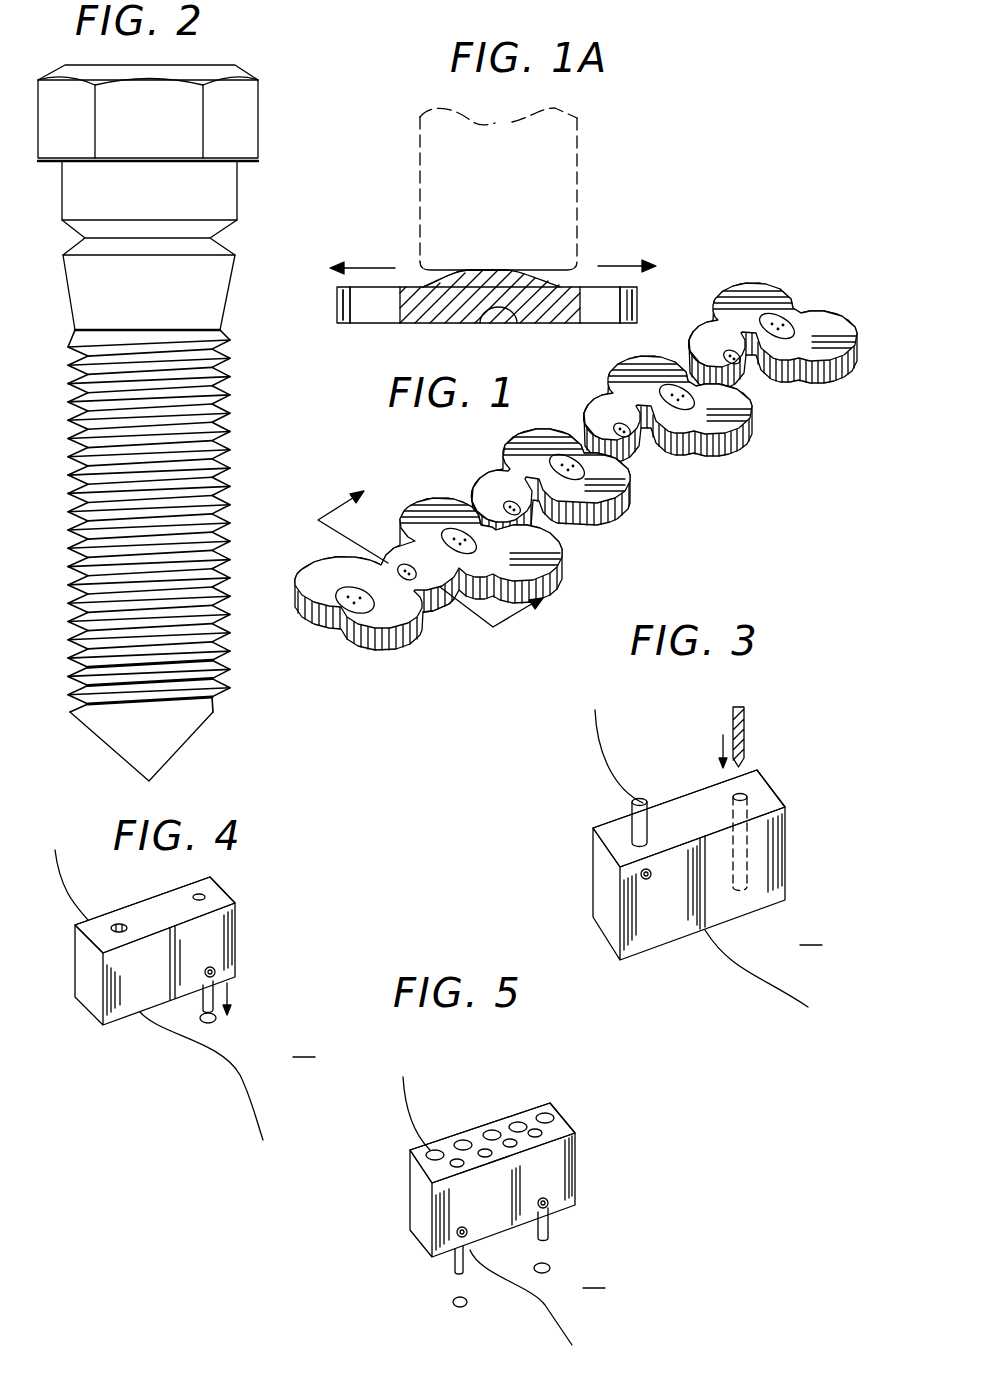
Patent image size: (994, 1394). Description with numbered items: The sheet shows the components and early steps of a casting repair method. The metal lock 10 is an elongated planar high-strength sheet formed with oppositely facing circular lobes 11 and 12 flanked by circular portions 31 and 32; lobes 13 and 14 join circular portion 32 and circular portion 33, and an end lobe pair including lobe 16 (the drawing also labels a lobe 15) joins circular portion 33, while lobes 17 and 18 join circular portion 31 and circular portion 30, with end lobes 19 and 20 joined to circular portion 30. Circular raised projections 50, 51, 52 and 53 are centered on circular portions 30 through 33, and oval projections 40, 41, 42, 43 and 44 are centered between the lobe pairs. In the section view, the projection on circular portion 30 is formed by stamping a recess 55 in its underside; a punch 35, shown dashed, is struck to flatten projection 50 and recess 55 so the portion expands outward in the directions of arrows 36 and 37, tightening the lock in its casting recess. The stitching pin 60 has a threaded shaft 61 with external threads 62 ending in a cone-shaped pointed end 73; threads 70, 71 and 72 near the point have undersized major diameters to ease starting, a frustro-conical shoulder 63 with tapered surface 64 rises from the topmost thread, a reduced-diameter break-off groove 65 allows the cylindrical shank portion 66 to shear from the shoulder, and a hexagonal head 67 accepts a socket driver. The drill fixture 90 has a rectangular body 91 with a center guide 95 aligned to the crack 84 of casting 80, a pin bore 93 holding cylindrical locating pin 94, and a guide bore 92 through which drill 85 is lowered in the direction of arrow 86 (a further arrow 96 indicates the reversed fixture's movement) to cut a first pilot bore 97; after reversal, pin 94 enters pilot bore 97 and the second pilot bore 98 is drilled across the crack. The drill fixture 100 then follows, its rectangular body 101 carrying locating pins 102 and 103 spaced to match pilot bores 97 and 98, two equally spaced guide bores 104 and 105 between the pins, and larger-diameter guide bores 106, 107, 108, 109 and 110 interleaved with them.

In FIG. 1A, the metal lock 10 is at (600, 256).
In FIG. 1, the metal lock 10 is at (645, 497).
In FIG. 1, the circular lobe 11 is at (617, 507).
In FIG. 1, the circular lobe 12 is at (561, 483).
In FIG. 1, the circular lobe 13 is at (710, 452).
In FIG. 1, the circular lobe 14 is at (668, 414).
In FIG. 1, the link lobe 15 is at (826, 388).
In FIG. 1, the circular lobe 16 is at (775, 343).
In FIG. 1A, the circular lobe 17 is at (623, 303).
In FIG. 1, the circular lobe 17 is at (530, 582).
In FIG. 1A, the circular lobe 18 is at (337, 305).
In FIG. 1, the circular lobe 18 is at (424, 595).
In FIG. 1, the circular lobe 19 is at (412, 642).
In FIG. 1, the circular lobe 20 is at (317, 580).
In FIG. 1A, the circular portion 30 is at (425, 300).
In FIG. 1, the circular portion 30 is at (433, 602).
In FIG. 1, the circular portion 31 is at (490, 485).
In FIG. 1, the circular portion 32 is at (598, 412).
In FIG. 1, the circular portion 33 is at (700, 345).
In FIG. 1A, the punch 35 is at (420, 172).
In FIG. 1A, the arrow 36 is at (376, 268).
In FIG. 1A, the arrow 37 is at (625, 262).
In FIG. 1, the raised projection 40 is at (565, 457).
In FIG. 1, the raised projection 41 is at (673, 390).
In FIG. 1, the raised projection 42 is at (776, 318).
In FIG. 1A, the raised projection 43 is at (470, 272).
In FIG. 1, the raised projection 43 is at (457, 532).
In FIG. 1, the raised projection 44 is at (357, 614).
In FIG. 1A, the raised projection 50 is at (500, 270).
In FIG. 1, the raised projection 50 is at (400, 568).
In FIG. 1, the raised projection 51 is at (518, 512).
In FIG. 1, the raised projection 52 is at (628, 436).
In FIG. 1, the raised projection 53 is at (740, 365).
In FIG. 1A, the recess 55 is at (496, 312).
In FIG. 2, the stitching pin 60 is at (213, 61).
In FIG. 2, the threaded shaft 61 is at (114, 403).
In FIG. 2, the external threads 62 is at (70, 518).
In FIG. 2, the shoulder 63 is at (88, 283).
In FIG. 2, the tapered surface 64 is at (228, 298).
In FIG. 2, the break-off groove 65 is at (218, 240).
In FIG. 2, the shank portion 66 is at (90, 190).
In FIG. 2, the hexagonal head 67 is at (188, 133).
In FIG. 2, the thread 70 is at (218, 698).
In FIG. 2, the thread 71 is at (218, 680).
In FIG. 2, the thread 72 is at (218, 660).
In FIG. 2, the pointed end 73 is at (120, 728).
In FIG. 3, the casting 80 is at (811, 932).
In FIG. 4, the casting 80 is at (304, 1044).
In FIG. 5, the casting 80 is at (594, 1275).
In FIG. 3, the crack 84 is at (762, 970).
In FIG. 4, the crack 84 is at (255, 1102).
In FIG. 5, the crack 84 is at (560, 1312).
In FIG. 3, the drill 85 is at (746, 735).
In FIG. 3, the arrow 86 is at (720, 745).
In FIG. 3, the drill fixture 90 is at (593, 890).
In FIG. 4, the drill fixture 90 is at (237, 941).
In FIG. 3, the rectangular body 91 is at (600, 858).
In FIG. 4, the rectangular body 91 is at (215, 897).
In FIG. 3, the guide bore 92 is at (745, 795).
In FIG. 4, the guide bore 92 is at (119, 924).
In FIG. 4, the pin bore 93 is at (198, 893).
In FIG. 3, the locating pin 94 is at (613, 808).
In FIG. 4, the locating pin 94 is at (205, 1012).
In FIG. 3, the center guide 95 is at (702, 915).
In FIG. 4, the center guide 95 is at (165, 1012).
In FIG. 4, the direction of removal 96 is at (228, 988).
In FIG. 4, the pilot bore 97 is at (217, 1018).
In FIG. 5, the pilot bore 97 is at (552, 1266).
In FIG. 5, the pilot bore 98 is at (455, 1302).
In FIG. 5, the drill fixture 100 is at (577, 1183).
In FIG. 5, the rectangular body 101 is at (562, 1130).
In FIG. 5, the locating pin 102 is at (549, 1225).
In FIG. 5, the locating pin 103 is at (452, 1263).
In FIG. 5, the guide bore 104 is at (485, 1158).
In FIG. 5, the guide bore 105 is at (511, 1148).
In FIG. 5, the guide bore 106 is at (437, 1150).
In FIG. 5, the guide bore 107 is at (464, 1140).
In FIG. 5, the guide bore 108 is at (493, 1130).
In FIG. 5, the guide bore 109 is at (519, 1122).
In FIG. 5, the guide bore 110 is at (546, 1114).